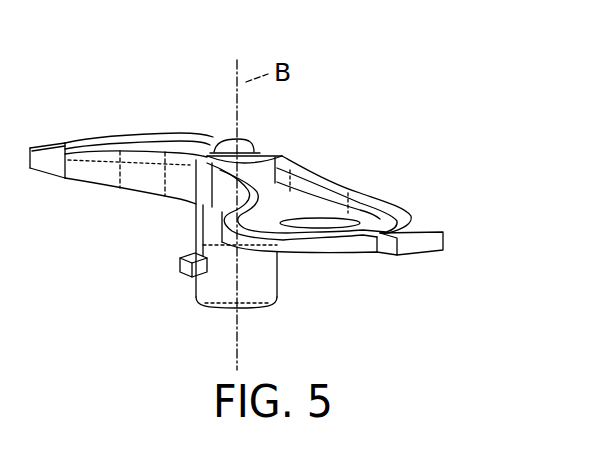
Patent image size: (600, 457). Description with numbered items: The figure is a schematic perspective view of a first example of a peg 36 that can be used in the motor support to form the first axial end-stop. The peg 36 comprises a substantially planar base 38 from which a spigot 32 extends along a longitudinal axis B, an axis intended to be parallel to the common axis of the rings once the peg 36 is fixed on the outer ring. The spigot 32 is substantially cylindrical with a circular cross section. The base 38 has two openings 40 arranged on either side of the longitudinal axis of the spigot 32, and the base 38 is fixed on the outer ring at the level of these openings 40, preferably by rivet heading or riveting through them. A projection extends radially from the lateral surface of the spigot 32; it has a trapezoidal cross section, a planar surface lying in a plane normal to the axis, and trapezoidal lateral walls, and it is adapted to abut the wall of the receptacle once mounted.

The peg 36 is at (440, 105).
The base 38 is at (168, 137).
The openings 40 is at (328, 220).
The spigot 32 is at (226, 268).